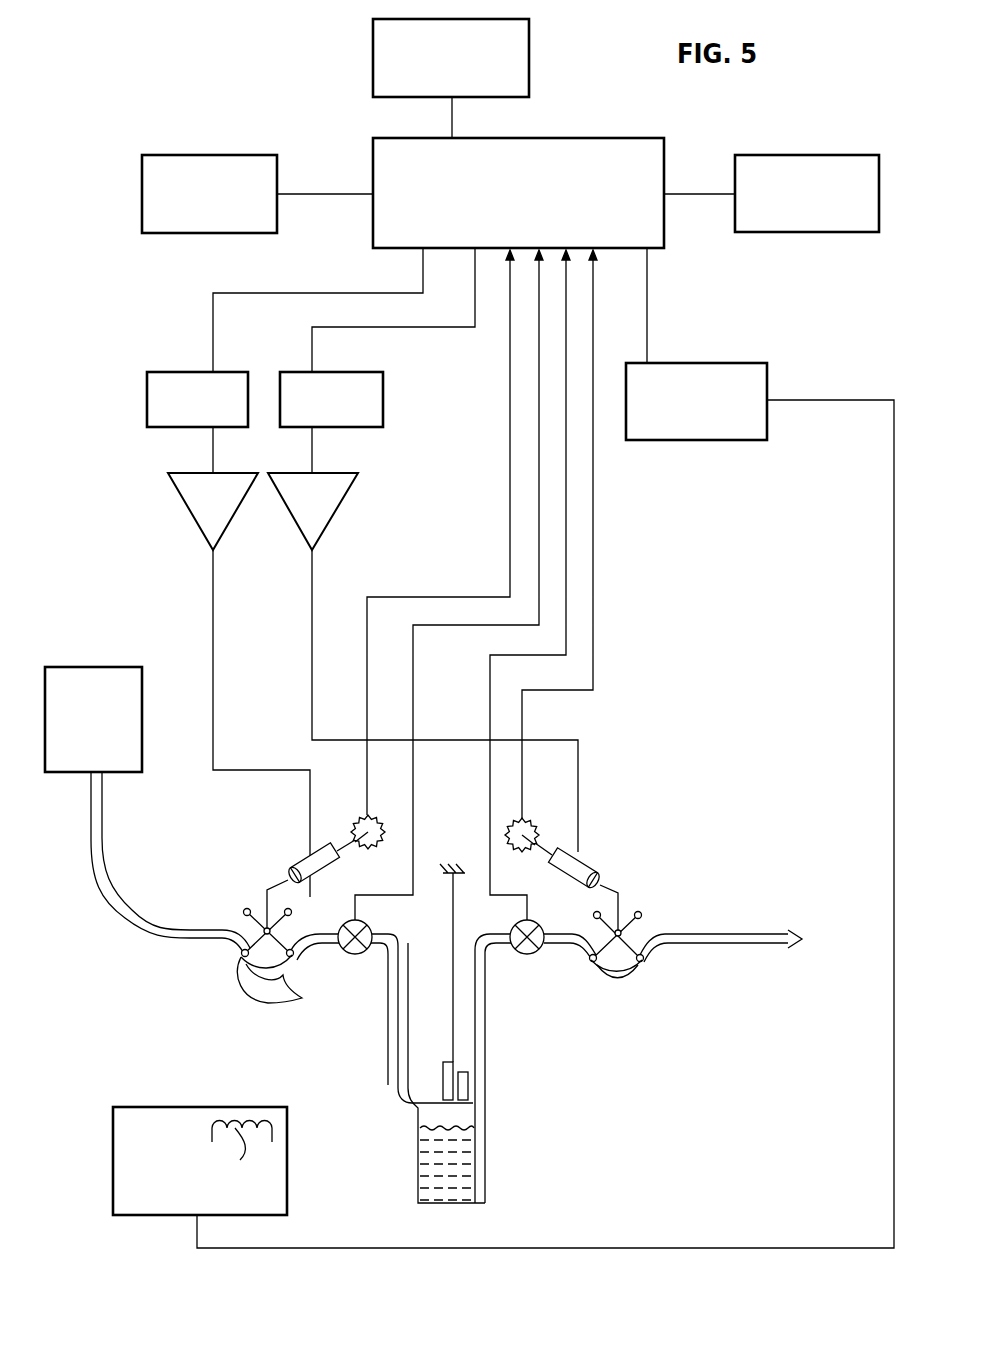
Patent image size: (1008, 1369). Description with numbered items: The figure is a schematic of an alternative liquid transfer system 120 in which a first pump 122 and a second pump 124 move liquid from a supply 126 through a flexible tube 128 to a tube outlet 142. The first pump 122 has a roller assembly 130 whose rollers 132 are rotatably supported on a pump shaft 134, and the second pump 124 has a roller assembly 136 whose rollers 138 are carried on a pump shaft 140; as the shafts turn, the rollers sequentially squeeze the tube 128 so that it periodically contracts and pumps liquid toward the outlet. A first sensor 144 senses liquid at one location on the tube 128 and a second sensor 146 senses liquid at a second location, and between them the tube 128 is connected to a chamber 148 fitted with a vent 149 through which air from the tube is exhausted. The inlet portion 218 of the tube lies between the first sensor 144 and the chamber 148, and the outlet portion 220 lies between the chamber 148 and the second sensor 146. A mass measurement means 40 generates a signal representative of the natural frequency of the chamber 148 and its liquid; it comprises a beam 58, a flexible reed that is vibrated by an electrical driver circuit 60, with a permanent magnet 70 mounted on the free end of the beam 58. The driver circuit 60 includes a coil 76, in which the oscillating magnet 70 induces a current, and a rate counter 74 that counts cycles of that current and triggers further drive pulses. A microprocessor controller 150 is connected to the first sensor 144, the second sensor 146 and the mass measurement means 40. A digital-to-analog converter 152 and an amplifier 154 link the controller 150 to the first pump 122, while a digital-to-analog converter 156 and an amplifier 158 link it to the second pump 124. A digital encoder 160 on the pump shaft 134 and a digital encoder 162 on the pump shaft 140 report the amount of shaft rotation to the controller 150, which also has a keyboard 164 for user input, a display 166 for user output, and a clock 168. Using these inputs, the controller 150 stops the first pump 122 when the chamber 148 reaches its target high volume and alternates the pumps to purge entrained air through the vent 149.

The mass measurement means 40 is at (351, 1098).
The beam 58 is at (453, 1003).
The electrical driver circuit 60 is at (128, 1110).
The permanent magnet 70 is at (437, 1088).
The rate counter 74 is at (710, 440).
The coil 76 is at (240, 1160).
The liquid transfer system 120 is at (195, 999).
The first pump 122 is at (300, 862).
The second pump 124 is at (587, 863).
The supply 126 is at (120, 667).
The flexible tube 128 is at (122, 897).
The roller assembly 130 is at (282, 928).
The rollers 132 is at (302, 998).
The pump shaft 134 is at (263, 898).
The roller assembly 136 is at (637, 928).
The rollers 138 is at (620, 973).
The pump shaft 140 is at (620, 902).
The tube outlet 142 is at (778, 943).
The first sensor 144 is at (373, 924).
The second sensor 146 is at (542, 953).
The chamber 148 is at (427, 1203).
The vent 149 is at (468, 1088).
The microprocessor controller 150 is at (619, 138).
The digital-to-analog converter 152 is at (147, 385).
The amplifier 154 is at (190, 510).
The digital-to-analog converter 156 is at (383, 395).
The amplifier 158 is at (338, 510).
The digital encoder 160 is at (358, 822).
The digital encoder 162 is at (530, 823).
The keyboard 164 is at (373, 50).
The display 166 is at (845, 232).
The clock 168 is at (155, 233).
The inlet portion 218 is at (400, 1020).
The outlet portion 220 is at (483, 1035).